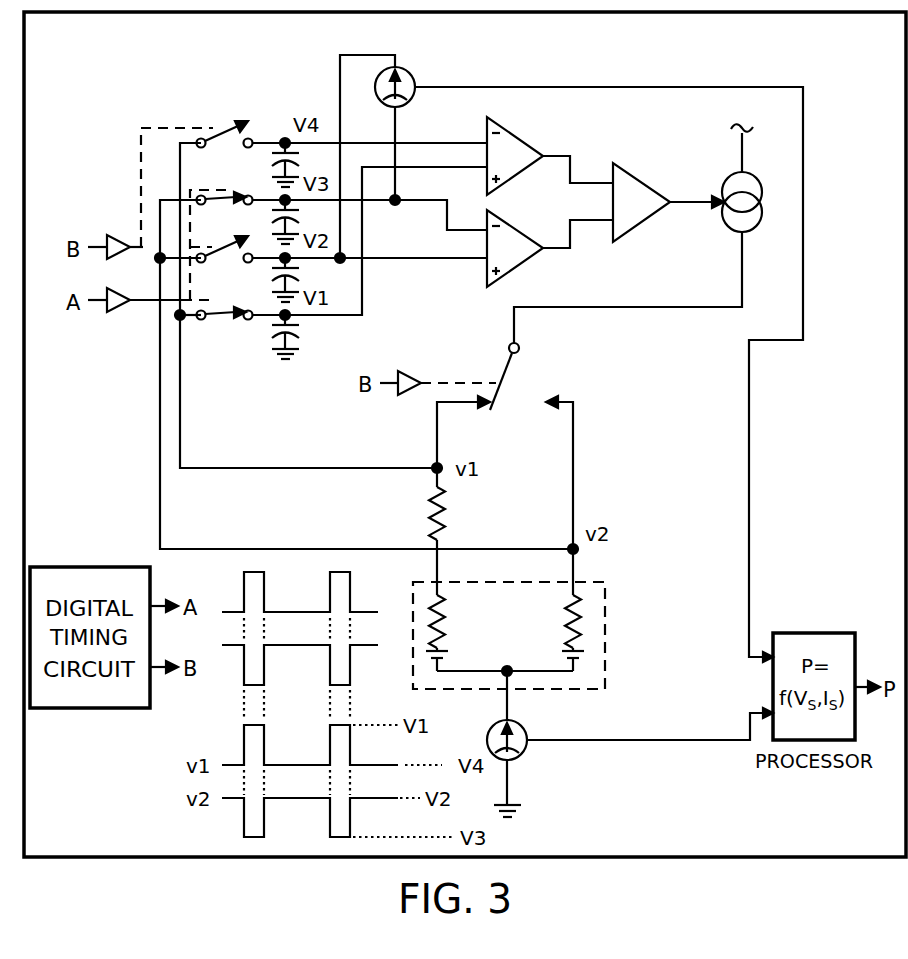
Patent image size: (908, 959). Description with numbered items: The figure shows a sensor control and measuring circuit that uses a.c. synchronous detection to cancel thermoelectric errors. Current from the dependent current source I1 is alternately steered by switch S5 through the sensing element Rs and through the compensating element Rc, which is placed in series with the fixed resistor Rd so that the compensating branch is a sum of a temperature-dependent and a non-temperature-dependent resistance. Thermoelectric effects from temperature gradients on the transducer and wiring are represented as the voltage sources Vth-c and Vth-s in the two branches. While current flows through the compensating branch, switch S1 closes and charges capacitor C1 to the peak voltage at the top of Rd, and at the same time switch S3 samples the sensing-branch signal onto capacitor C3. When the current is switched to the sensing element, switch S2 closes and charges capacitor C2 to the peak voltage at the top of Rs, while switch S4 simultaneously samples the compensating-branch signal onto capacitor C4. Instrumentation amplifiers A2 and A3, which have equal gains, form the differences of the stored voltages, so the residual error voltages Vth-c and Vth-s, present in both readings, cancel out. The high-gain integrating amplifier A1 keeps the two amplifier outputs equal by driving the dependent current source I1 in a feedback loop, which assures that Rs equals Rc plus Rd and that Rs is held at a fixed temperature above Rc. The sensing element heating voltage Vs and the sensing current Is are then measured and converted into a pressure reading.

The switch S1 is at (225, 327).
The switch S2 is at (225, 263).
The switch S3 is at (225, 212).
The switch S4 is at (225, 148).
The switch S5 is at (518, 376).
The capacitor C1 is at (300, 337).
The capacitor C2 is at (300, 280).
The capacitor C3 is at (300, 222).
The capacitor C4 is at (300, 165).
The high-gain integrating amplifier A1 is at (641, 202).
The instrumentation amplifier A2 is at (515, 156).
The instrumentation amplifier A3 is at (515, 248).
The dependent current source I1 is at (757, 163).
The sensing element heating voltage Vs is at (452, 82).
The sensing element current Is is at (516, 734).
The fixed resistor Rd is at (452, 513).
The compensating element Rc is at (456, 621).
The sensing element Rs is at (554, 621).
The thermoelectric voltage source Vth-c is at (460, 660).
The thermoelectric voltage source Vth-s is at (593, 660).